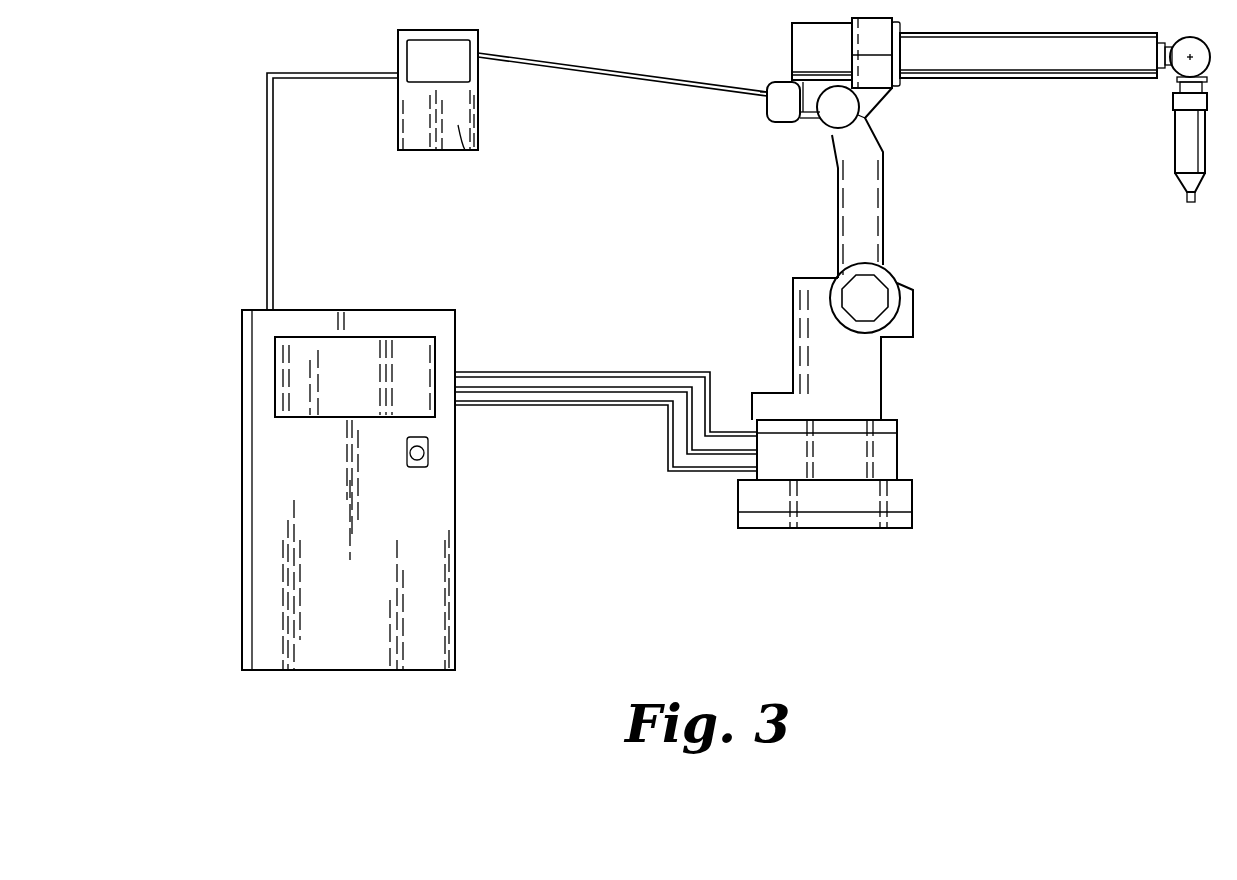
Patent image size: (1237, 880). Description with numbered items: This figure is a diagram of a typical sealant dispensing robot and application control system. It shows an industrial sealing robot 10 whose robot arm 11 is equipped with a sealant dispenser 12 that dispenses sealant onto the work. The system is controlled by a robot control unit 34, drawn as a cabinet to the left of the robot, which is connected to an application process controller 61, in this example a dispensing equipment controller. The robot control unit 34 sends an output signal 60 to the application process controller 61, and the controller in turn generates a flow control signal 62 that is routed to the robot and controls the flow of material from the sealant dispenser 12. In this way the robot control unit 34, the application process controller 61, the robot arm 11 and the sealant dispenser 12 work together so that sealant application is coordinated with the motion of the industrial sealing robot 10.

The industrial sealing robot 10 is at (832, 273).
The robot arm 11 is at (1003, 50).
The sealant dispenser 12 is at (1183, 158).
The robot control unit 34 is at (240, 525).
The output signal 60 is at (267, 158).
The application process controller 61 is at (463, 150).
The flow control signal 62 is at (718, 92).